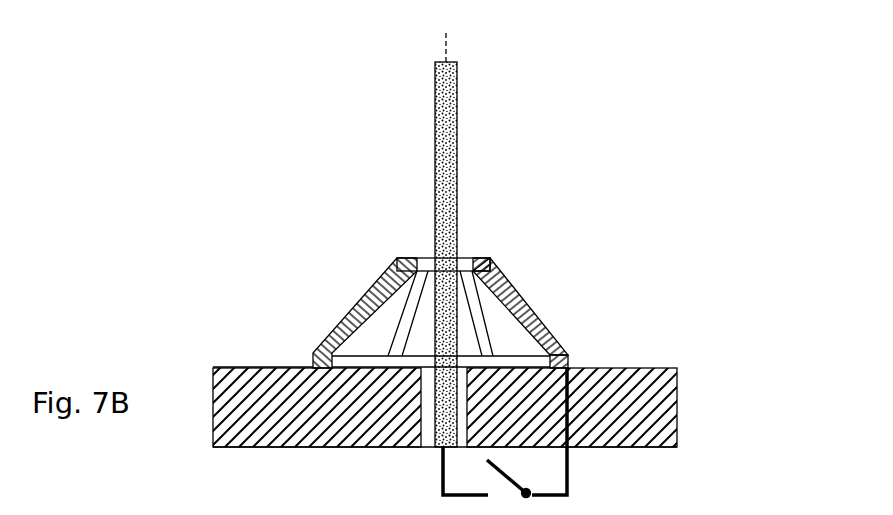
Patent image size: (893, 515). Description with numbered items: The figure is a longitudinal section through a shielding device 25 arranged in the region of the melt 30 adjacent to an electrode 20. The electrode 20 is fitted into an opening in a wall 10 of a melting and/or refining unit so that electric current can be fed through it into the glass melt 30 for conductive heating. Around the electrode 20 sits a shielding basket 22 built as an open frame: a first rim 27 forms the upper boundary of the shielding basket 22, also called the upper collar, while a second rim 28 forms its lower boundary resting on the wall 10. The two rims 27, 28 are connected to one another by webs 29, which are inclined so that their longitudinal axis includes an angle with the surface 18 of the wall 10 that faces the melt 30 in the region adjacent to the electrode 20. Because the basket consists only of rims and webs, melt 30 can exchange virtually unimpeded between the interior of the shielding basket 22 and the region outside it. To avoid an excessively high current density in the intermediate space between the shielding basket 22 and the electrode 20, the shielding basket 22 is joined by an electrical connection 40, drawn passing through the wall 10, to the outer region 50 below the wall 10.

The wall 10 is at (662, 390).
The surface facing the melt 18 is at (278, 367).
The electrode 20 is at (458, 70).
The shielding basket 22 is at (338, 302).
The shielding device 25 is at (737, 62).
The first rim 27 is at (475, 260).
The second rim 28 is at (568, 358).
The webs 29 is at (512, 287).
The melt 30 is at (424, 250).
The electrical connection 40 is at (568, 463).
The outer region 50 is at (445, 480).